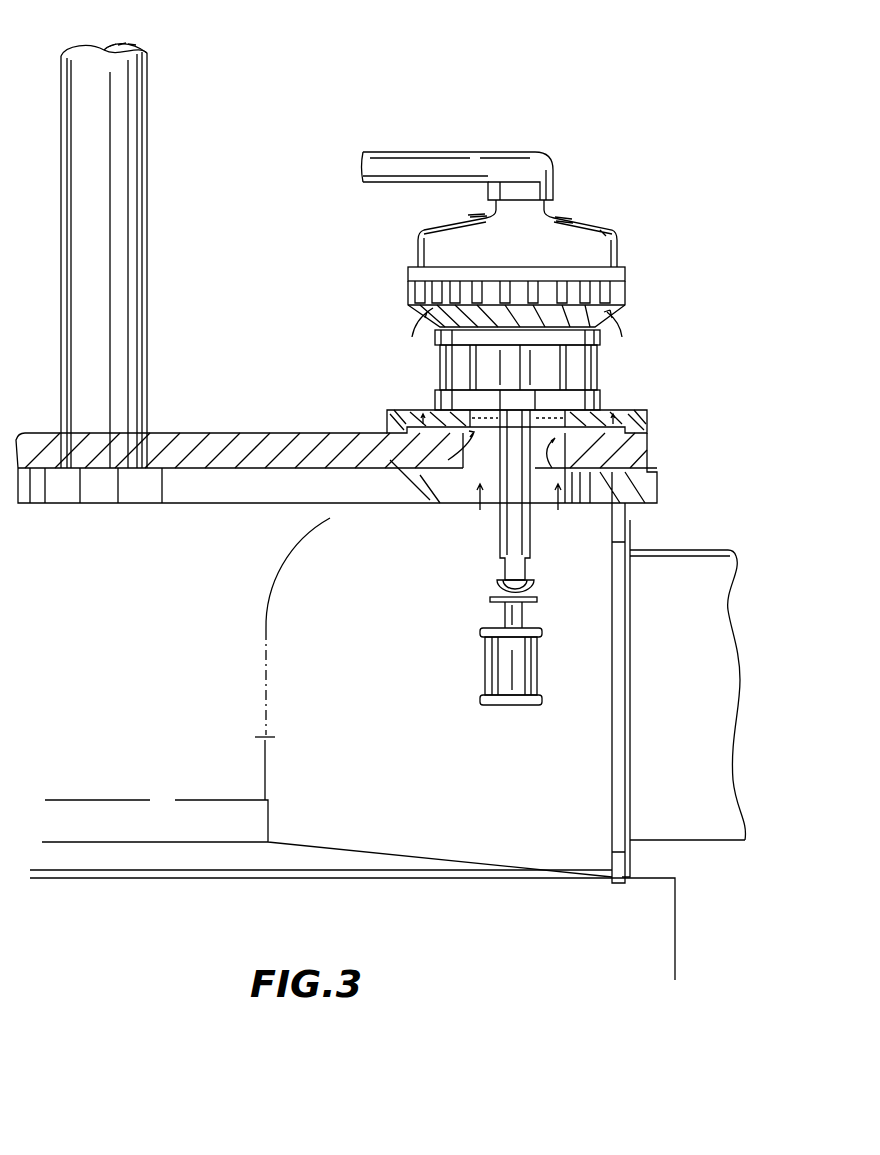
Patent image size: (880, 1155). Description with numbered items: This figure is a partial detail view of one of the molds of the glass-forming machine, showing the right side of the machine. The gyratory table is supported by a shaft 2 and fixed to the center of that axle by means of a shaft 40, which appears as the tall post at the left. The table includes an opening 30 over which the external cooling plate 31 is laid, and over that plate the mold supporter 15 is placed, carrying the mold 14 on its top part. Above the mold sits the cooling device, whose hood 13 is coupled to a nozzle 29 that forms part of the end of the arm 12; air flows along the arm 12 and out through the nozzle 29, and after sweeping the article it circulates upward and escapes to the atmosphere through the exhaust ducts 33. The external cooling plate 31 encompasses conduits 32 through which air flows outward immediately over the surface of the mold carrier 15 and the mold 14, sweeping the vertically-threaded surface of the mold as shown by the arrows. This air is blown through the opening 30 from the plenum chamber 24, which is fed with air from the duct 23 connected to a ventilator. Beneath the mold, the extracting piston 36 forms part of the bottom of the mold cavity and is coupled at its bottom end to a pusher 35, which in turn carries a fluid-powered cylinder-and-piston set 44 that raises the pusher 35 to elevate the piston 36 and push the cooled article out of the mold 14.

The shaft 2 is at (272, 743).
The arm 12 is at (455, 160).
The hood 13 is at (610, 240).
The mold 14 is at (626, 290).
The mold supporter 15 is at (598, 372).
The duct 23 is at (715, 604).
The plenum chamber 24 is at (403, 773).
The nozzle 29 is at (548, 178).
The opening 30 is at (650, 465).
The external cooling plate 31 is at (650, 430).
The conduits 32 is at (430, 410).
The ducts 33 is at (470, 215).
The pusher 35 is at (508, 545).
The extracting piston 36 is at (490, 368).
The shaft 40 is at (133, 128).
The fluid-powered cylinder-and-piston set 44 is at (492, 598).